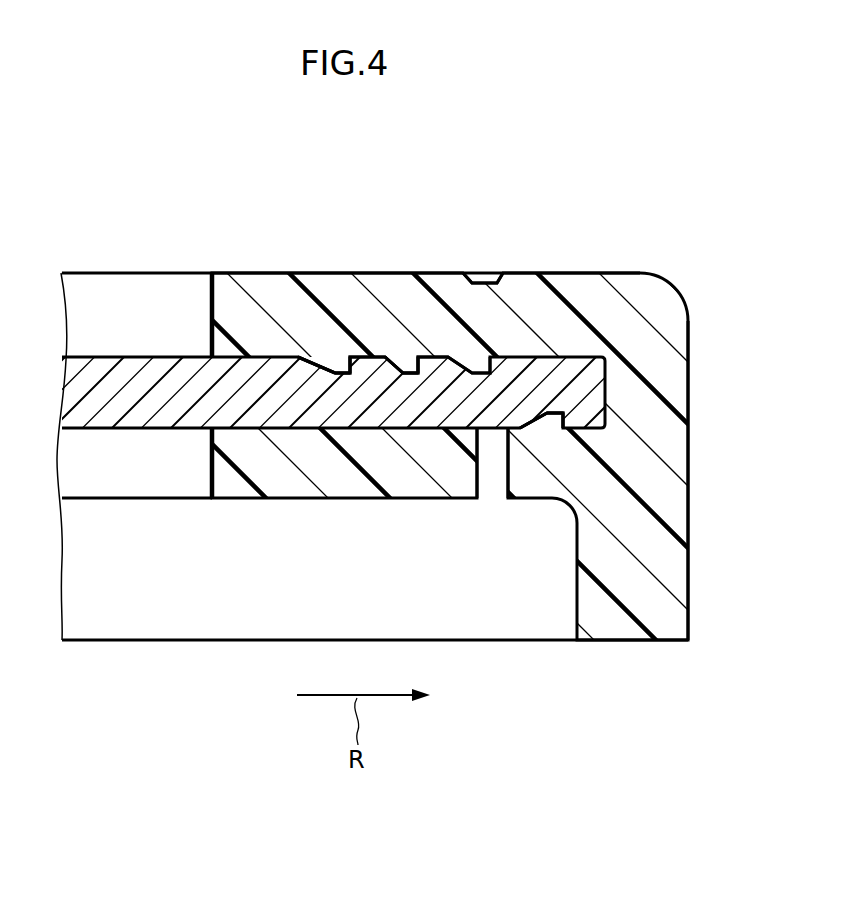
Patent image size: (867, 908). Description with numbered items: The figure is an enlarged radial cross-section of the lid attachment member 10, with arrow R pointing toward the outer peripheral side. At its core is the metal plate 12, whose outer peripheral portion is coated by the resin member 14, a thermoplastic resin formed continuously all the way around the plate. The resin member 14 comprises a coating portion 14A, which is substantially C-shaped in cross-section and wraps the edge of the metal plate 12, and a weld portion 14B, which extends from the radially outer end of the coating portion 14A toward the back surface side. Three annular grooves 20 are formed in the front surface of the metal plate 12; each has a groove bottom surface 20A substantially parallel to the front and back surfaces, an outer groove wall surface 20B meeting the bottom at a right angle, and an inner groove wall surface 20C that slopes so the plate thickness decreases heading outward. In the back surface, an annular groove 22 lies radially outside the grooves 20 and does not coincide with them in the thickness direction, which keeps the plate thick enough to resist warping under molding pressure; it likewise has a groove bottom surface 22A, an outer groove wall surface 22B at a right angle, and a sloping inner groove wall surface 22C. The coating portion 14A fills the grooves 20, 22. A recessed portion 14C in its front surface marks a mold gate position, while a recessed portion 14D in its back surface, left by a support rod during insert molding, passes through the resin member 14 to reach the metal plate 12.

The lid attachment member 10 is at (652, 222).
The metal plate 12 is at (147, 357).
The resin member 14 is at (305, 273).
The coating portion 14A is at (253, 273).
The weld portion 14B is at (690, 522).
The recessed portion 14C is at (493, 272).
The recessed portion 14D is at (481, 491).
The annular groove 20 is at (488, 210).
The groove bottom surface 20A is at (407, 372).
The groove wall surface 20B is at (412, 370).
The groove wall surface 20C is at (401, 372).
The annular groove 22 is at (568, 590).
The groove bottom surface 22A is at (550, 416).
The groove wall surface 22B is at (556, 416).
The groove wall surface 22C is at (545, 416).